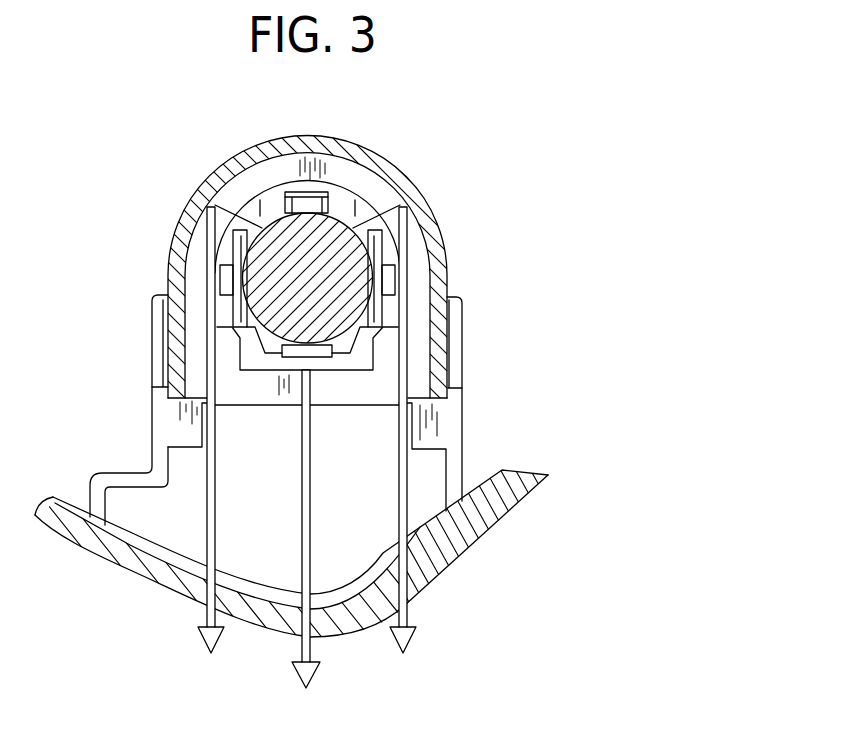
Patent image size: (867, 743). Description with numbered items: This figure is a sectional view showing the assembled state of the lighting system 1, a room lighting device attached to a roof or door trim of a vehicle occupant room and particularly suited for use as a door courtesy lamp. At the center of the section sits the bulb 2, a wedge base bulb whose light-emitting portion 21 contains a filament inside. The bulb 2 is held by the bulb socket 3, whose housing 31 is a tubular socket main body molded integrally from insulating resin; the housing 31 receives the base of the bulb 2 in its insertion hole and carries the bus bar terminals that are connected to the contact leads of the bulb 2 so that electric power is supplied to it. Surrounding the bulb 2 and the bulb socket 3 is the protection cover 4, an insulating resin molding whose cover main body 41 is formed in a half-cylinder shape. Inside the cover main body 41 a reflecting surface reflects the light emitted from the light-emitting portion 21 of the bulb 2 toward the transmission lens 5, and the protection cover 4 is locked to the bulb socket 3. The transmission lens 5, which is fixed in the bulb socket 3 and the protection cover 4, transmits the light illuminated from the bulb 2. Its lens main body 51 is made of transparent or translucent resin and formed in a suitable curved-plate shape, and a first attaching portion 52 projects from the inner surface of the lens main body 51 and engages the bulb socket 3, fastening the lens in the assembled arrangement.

The lighting system 1 is at (142, 195).
The bulb 2 is at (266, 203).
The light-emitting portion 21 is at (262, 345).
The bulb socket 3 is at (358, 370).
The housing 31 is at (322, 360).
The protection cover 4 is at (427, 163).
The cover main body 41 is at (348, 143).
The transmission lens 5 is at (510, 535).
The lens main body 51 is at (464, 551).
The first attaching portion 52 is at (463, 430).